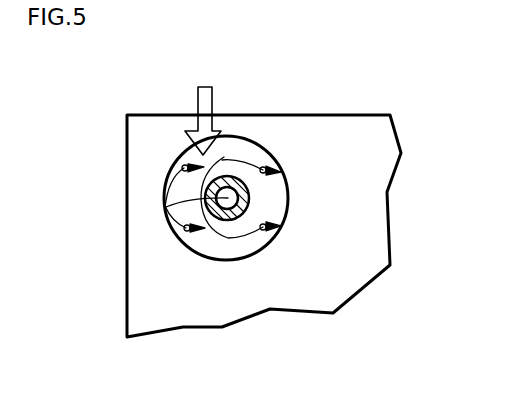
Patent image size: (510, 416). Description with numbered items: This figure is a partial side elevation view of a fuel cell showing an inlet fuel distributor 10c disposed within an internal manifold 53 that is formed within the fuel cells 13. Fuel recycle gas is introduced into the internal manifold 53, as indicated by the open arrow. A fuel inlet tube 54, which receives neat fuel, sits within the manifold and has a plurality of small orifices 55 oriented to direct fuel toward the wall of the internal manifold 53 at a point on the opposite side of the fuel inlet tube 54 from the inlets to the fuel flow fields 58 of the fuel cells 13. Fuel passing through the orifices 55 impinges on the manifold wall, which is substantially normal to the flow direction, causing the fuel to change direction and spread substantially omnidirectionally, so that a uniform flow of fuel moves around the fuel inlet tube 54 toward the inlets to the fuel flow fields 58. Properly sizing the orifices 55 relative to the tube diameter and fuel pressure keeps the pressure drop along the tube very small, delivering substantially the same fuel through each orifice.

The inlet fuel distributor 10c is at (172, 136).
The fuel cells 13 is at (350, 130).
The internal manifold 53 is at (229, 258).
The fuel inlet tube 54 is at (249, 194).
The small orifices 55 is at (232, 189).
The fuel flow fields 58 is at (350, 255).